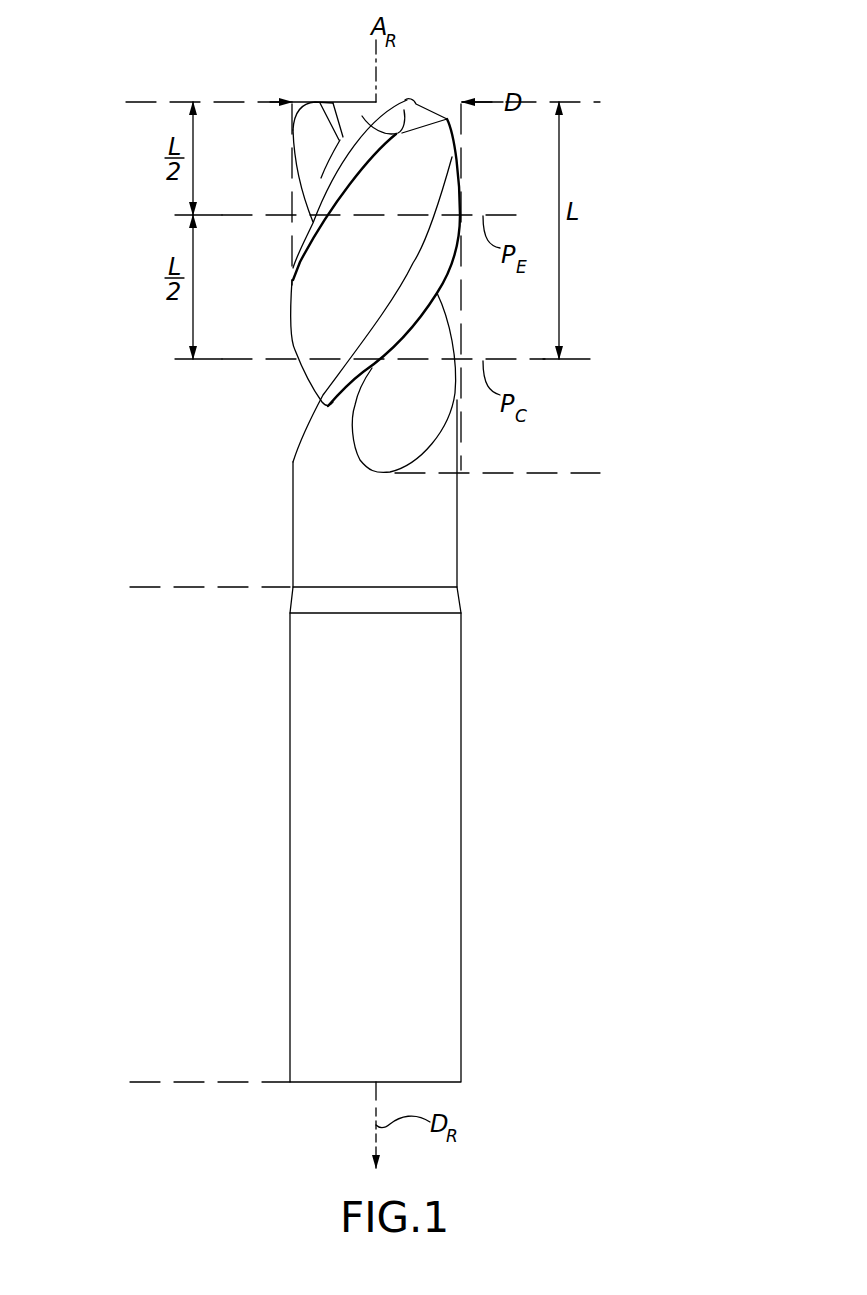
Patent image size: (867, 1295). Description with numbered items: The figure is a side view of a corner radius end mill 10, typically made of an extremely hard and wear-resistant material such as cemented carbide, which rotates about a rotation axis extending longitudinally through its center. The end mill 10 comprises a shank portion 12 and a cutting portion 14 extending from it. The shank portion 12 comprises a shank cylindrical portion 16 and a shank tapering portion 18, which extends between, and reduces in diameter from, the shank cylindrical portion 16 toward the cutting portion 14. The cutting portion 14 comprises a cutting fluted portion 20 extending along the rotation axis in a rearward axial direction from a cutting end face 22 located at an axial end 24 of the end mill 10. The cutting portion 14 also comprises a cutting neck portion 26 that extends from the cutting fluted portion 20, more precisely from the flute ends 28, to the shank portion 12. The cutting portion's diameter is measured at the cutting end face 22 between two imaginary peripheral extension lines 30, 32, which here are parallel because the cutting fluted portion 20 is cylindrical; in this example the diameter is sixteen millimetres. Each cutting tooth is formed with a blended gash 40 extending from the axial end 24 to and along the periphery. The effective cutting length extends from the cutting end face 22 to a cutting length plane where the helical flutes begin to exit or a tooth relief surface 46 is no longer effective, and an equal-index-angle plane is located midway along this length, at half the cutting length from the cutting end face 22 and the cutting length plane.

The corner radius end mill 10 is at (507, 44).
The shank portion 12 is at (126, 587).
The cutting portion 14 is at (126, 102).
The shank cylindrical portion 16 is at (440, 820).
The shank tapering portion 18 is at (440, 603).
The cutting fluted portion 20 is at (600, 102).
The cutting end face 22 is at (338, 100).
The axial end 24 is at (424, 95).
The cutting neck portion 26 is at (286, 509).
The flute ends 28 is at (383, 478).
The imaginary peripheral extension line 30 is at (462, 159).
The imaginary peripheral extension line 32 is at (292, 178).
The blended gash 40 is at (322, 101).
The tooth relief surface 46 is at (366, 375).